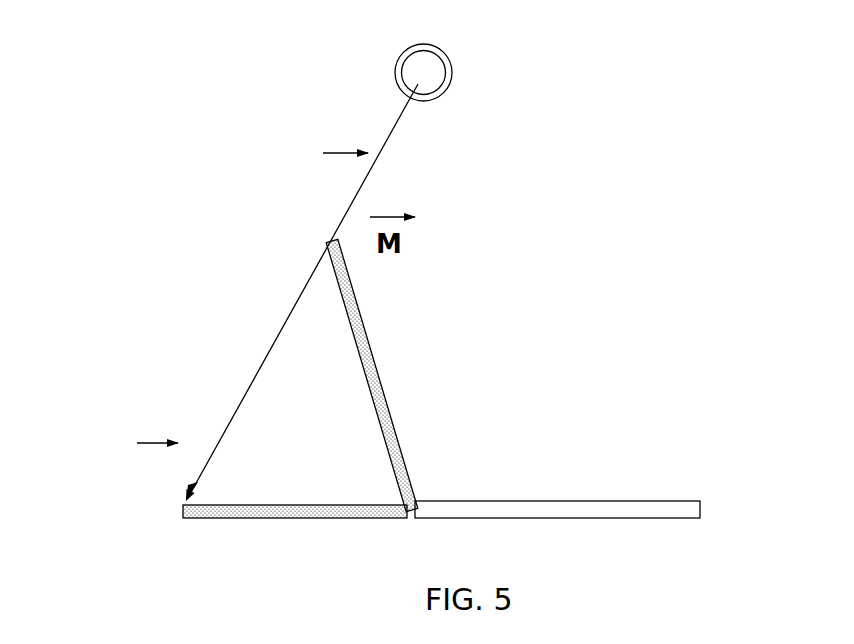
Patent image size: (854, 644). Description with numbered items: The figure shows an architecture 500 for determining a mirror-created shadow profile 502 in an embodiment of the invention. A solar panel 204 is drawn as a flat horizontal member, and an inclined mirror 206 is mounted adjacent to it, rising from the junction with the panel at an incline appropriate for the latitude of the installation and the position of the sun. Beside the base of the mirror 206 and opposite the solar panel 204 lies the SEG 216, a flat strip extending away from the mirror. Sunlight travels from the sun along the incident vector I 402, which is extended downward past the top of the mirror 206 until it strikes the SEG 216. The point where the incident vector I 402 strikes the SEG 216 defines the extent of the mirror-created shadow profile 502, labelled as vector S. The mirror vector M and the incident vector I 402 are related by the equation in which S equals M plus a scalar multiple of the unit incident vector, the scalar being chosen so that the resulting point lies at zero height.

The architecture 500 is at (567, 60).
The incident vector I 402 is at (328, 177).
The mirror-created shadow profile 502 is at (136, 467).
The inclined mirror 206 is at (363, 333).
The SEG 216 is at (280, 518).
The solar panel 204 is at (647, 518).